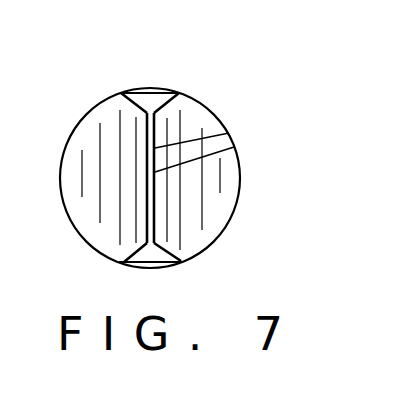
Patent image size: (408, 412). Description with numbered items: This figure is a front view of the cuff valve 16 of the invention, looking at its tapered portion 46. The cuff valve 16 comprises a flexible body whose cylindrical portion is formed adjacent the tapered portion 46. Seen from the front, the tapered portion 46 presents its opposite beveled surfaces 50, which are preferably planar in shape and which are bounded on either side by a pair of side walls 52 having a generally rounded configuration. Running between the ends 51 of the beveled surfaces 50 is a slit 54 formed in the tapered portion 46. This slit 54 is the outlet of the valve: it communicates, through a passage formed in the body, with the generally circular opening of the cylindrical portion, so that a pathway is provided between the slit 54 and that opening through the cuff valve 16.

The cuff valve 16 is at (148, 54).
The tapered portion 46 is at (108, 208).
The beveled surfaces 50 is at (90, 147).
The ends 51 is at (236, 138).
The side walls 52 is at (160, 96).
The slit 54 is at (229, 133).